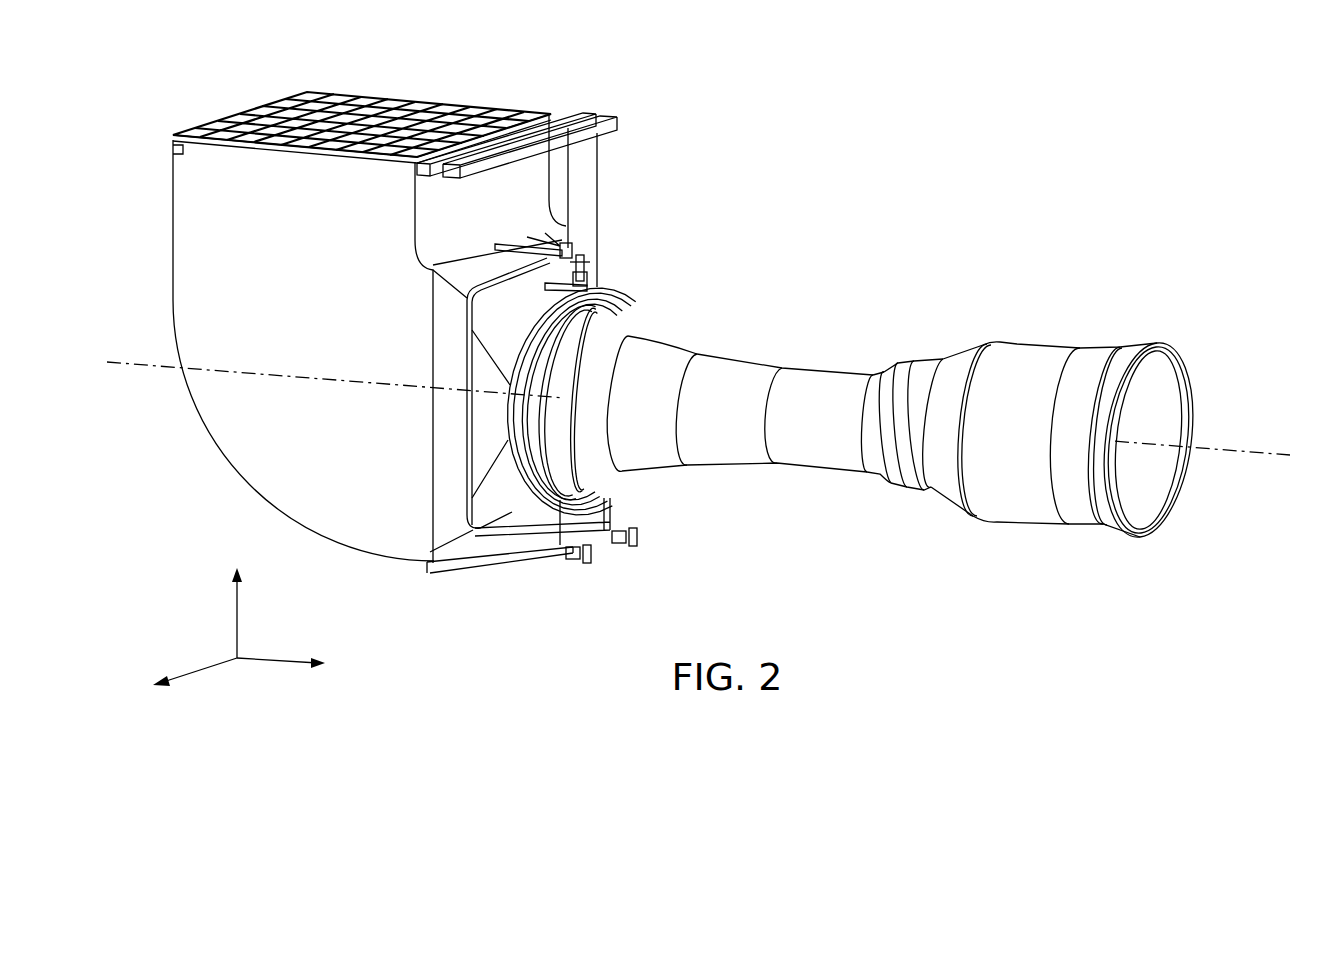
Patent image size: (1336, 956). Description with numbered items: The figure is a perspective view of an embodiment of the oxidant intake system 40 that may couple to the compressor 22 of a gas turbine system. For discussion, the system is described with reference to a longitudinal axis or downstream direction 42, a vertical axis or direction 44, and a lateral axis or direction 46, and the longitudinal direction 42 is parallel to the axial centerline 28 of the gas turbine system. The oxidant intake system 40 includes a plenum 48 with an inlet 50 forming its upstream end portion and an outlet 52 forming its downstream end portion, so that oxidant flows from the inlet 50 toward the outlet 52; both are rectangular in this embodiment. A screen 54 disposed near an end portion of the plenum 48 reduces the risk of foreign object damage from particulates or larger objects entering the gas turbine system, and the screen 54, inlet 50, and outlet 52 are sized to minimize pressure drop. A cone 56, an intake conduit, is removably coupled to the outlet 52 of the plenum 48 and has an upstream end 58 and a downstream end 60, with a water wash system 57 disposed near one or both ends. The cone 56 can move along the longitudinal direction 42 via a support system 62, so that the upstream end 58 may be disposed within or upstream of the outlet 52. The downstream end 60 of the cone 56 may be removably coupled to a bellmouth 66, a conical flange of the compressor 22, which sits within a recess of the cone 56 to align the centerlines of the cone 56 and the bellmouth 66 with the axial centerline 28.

The compressor 22 is at (673, 342).
The axial centerline 28 is at (1207, 450).
The oxidant intake system 40 is at (708, 116).
The longitudinal axis 42 is at (275, 659).
The vertical axis 44 is at (236, 605).
The lateral axis 46 is at (200, 669).
The plenum 48 is at (173, 192).
The inlet 50 is at (173, 144).
The outlet 52 is at (549, 226).
The screen 54 is at (367, 100).
The cone 56 is at (483, 433).
The water wash system 57 is at (505, 338).
The upstream end 58 is at (583, 255).
The downstream end 60 is at (588, 284).
The support system 62 is at (586, 565).
The bellmouth 66 is at (603, 488).